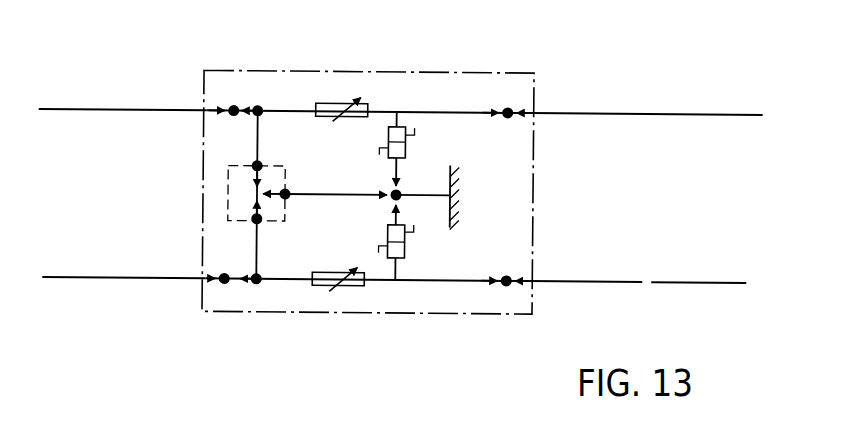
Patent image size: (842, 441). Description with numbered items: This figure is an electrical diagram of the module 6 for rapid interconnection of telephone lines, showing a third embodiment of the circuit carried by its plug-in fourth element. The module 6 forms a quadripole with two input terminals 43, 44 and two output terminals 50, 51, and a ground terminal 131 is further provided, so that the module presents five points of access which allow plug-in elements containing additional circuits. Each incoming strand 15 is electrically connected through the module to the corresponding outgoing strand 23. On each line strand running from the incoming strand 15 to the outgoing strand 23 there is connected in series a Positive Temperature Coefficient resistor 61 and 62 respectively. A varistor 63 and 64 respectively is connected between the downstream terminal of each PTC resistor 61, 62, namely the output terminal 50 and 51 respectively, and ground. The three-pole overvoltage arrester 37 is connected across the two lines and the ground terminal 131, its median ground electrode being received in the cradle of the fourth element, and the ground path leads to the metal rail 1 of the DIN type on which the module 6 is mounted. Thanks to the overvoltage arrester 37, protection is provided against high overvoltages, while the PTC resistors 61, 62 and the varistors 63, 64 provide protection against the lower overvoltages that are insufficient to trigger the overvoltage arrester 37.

The metal rail 1 is at (455, 184).
The module 6 is at (200, 233).
The incoming strand of line 15 is at (116, 111).
The outgoing strand of line 23 is at (678, 111).
The three-pole overvoltage arrester 37 is at (228, 183).
The input terminal 43 is at (233, 108).
The input terminal 44 is at (226, 283).
The output terminal 50 is at (509, 110).
The output terminal 51 is at (508, 284).
The Positive Temperature Coefficient resistor 61 is at (326, 108).
The Positive Temperature Coefficient resistor 62 is at (356, 288).
The varistor 63 is at (408, 125).
The varistor 64 is at (402, 262).
The ground terminal 131 is at (400, 200).